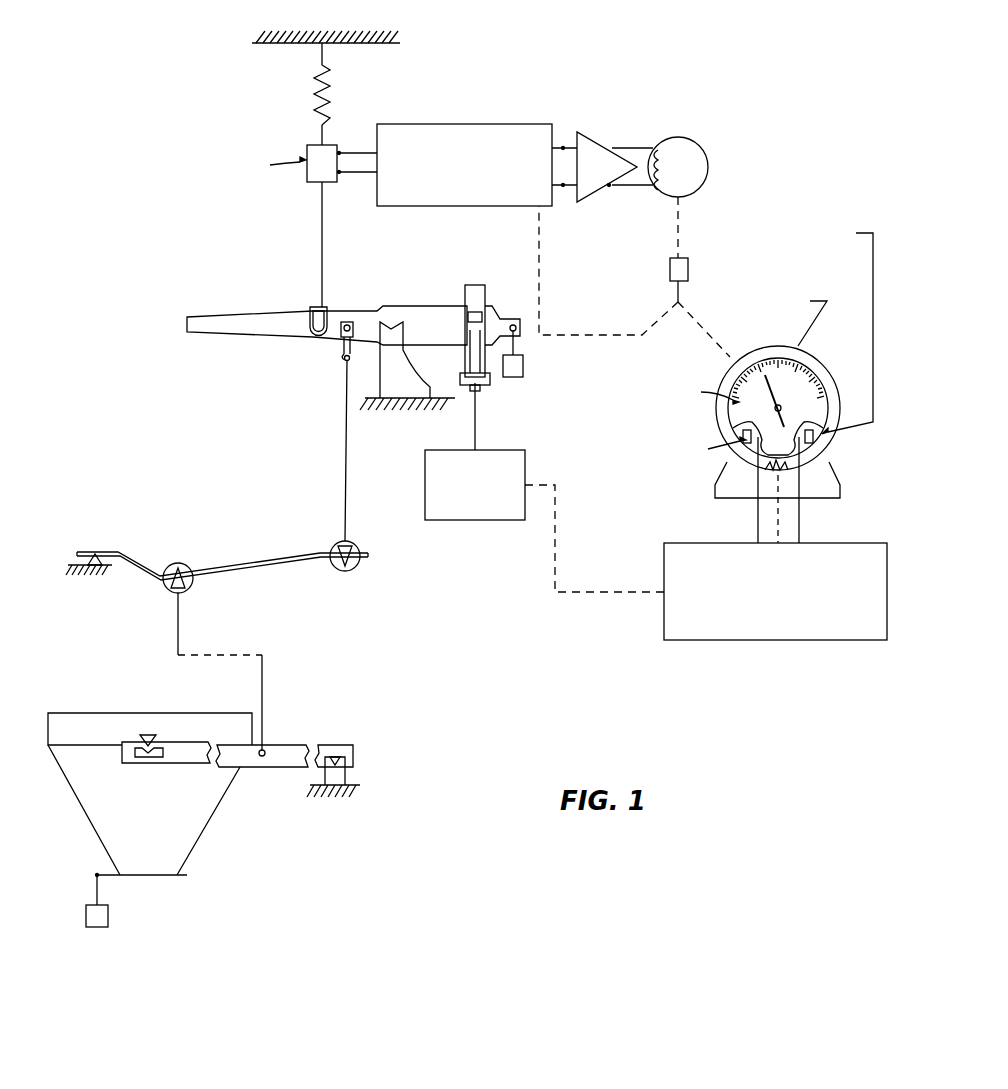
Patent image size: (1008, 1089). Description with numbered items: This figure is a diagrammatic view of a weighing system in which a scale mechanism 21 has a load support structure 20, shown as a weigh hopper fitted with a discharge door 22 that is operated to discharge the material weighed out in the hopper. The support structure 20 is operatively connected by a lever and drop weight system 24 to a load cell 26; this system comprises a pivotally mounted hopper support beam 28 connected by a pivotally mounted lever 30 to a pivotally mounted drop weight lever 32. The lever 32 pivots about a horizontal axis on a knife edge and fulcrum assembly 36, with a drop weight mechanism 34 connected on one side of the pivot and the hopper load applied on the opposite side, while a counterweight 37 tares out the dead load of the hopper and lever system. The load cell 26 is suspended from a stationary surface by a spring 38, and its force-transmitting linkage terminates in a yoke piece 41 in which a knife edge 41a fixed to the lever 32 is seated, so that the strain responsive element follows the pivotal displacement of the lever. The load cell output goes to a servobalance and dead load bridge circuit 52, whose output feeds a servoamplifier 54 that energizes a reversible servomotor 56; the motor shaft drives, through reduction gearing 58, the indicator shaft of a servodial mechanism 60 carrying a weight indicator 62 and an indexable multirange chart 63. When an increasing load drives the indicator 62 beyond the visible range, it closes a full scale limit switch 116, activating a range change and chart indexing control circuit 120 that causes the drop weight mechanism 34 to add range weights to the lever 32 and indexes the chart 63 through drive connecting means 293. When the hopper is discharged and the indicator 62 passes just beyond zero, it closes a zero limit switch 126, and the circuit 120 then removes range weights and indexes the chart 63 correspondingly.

The load support structure 20 is at (92, 832).
The scale mechanism 21 is at (141, 820).
The discharge door 22 is at (156, 876).
The lever and drop weight system 24 is at (368, 793).
The load cell 26 is at (304, 184).
The hopper support beam 28 is at (266, 745).
The lever 30 is at (272, 568).
The drop weight lever 32 is at (222, 334).
The drop weight mechanism 34 is at (476, 521).
The knife edge and fulcrum assembly 36 is at (392, 318).
The counterweight 37 is at (524, 368).
The spring 38 is at (328, 72).
The yoke piece 41 is at (327, 311).
The knife edge 41a is at (317, 336).
The servobalance and dead load bridge circuit 52 is at (487, 124).
The servoamplifier 54 is at (586, 137).
The reversible servomotor 56 is at (681, 138).
The reduction gearing 58 is at (690, 270).
The servodial mechanism 60 is at (716, 374).
The weight indicator 62 is at (770, 385).
The multirange chart 63 is at (806, 372).
The full scale limit switch 116 is at (822, 443).
The range change and chart indexing control circuit 120 is at (708, 641).
The zero limit switch 126 is at (742, 437).
The drive connecting means 293 is at (781, 519).